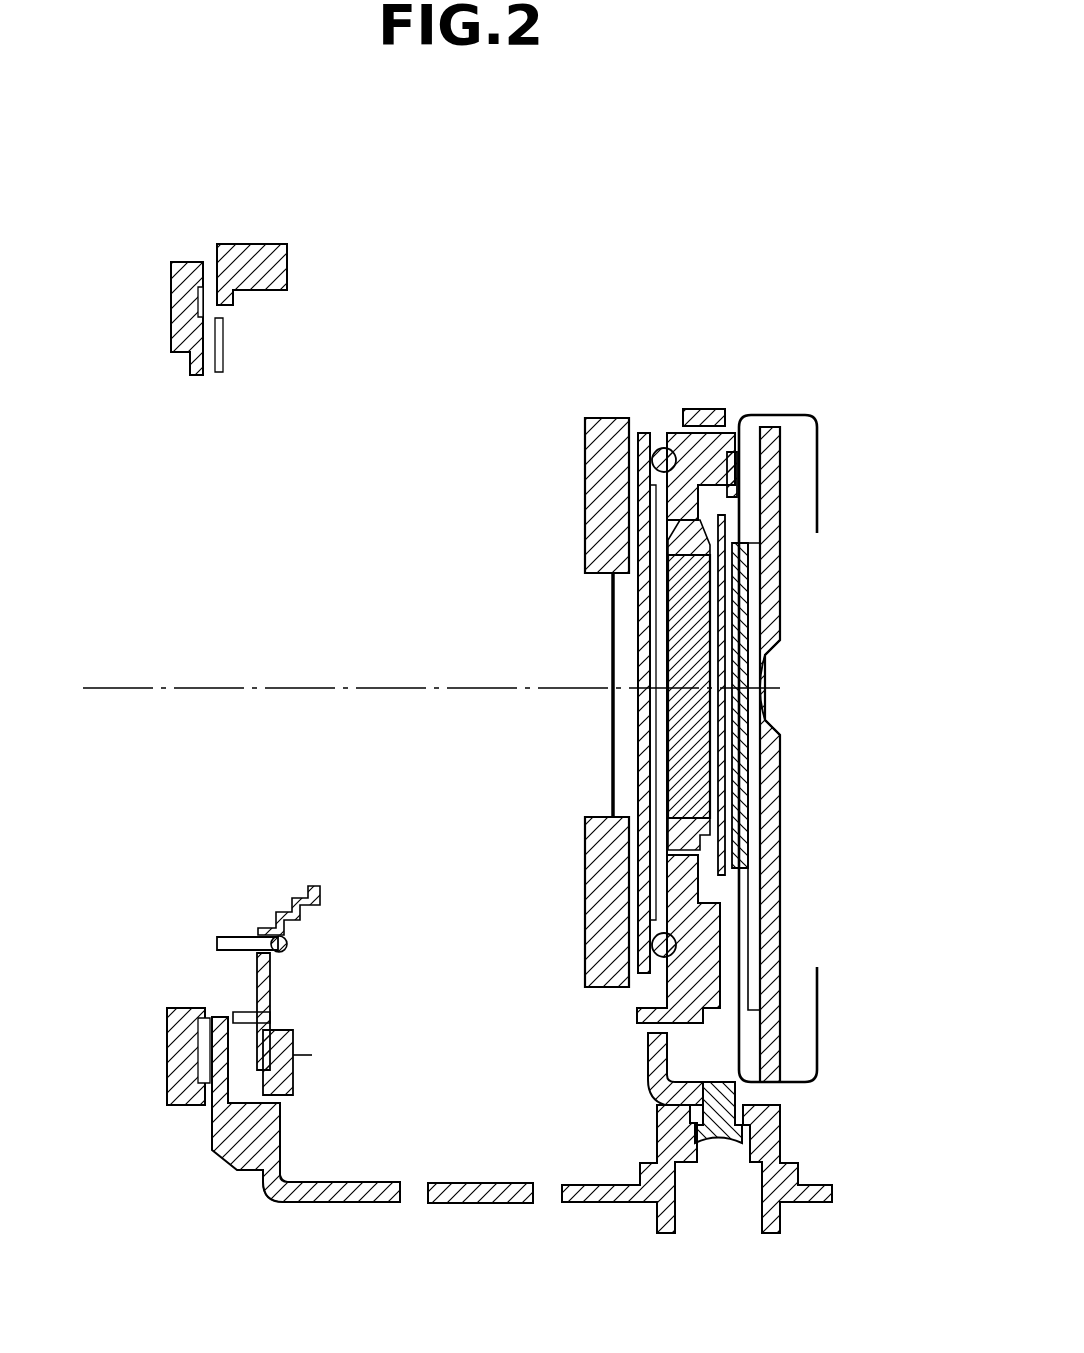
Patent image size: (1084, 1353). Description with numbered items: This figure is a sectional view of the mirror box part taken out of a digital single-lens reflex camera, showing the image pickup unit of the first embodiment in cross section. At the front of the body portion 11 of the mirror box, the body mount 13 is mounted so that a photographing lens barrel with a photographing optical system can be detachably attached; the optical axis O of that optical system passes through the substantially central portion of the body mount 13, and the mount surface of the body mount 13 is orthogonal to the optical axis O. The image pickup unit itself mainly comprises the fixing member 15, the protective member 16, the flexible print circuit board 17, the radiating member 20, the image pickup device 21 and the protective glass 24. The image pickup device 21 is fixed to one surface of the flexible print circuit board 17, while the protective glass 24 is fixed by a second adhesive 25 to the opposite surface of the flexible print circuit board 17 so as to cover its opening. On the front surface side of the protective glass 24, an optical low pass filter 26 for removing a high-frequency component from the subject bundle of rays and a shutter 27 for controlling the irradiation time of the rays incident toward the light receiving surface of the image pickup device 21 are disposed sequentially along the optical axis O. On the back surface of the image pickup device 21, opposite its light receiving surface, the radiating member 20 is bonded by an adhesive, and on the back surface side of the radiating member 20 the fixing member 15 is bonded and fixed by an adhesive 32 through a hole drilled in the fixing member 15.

The optical axis O is at (245, 688).
The body portion 11 is at (262, 255).
The body mount 13 is at (190, 283).
The fixing member 15 is at (768, 836).
The protective member 16 is at (737, 468).
The flexible print circuit board 17 is at (818, 1020).
The radiating member 20 is at (757, 672).
The image pickup device 21 is at (675, 606).
The protective glass 24 is at (705, 762).
The second adhesive 25 is at (740, 528).
The optical low pass filter 26 is at (660, 648).
The shutter 27 is at (613, 680).
The adhesive 32 is at (766, 717).